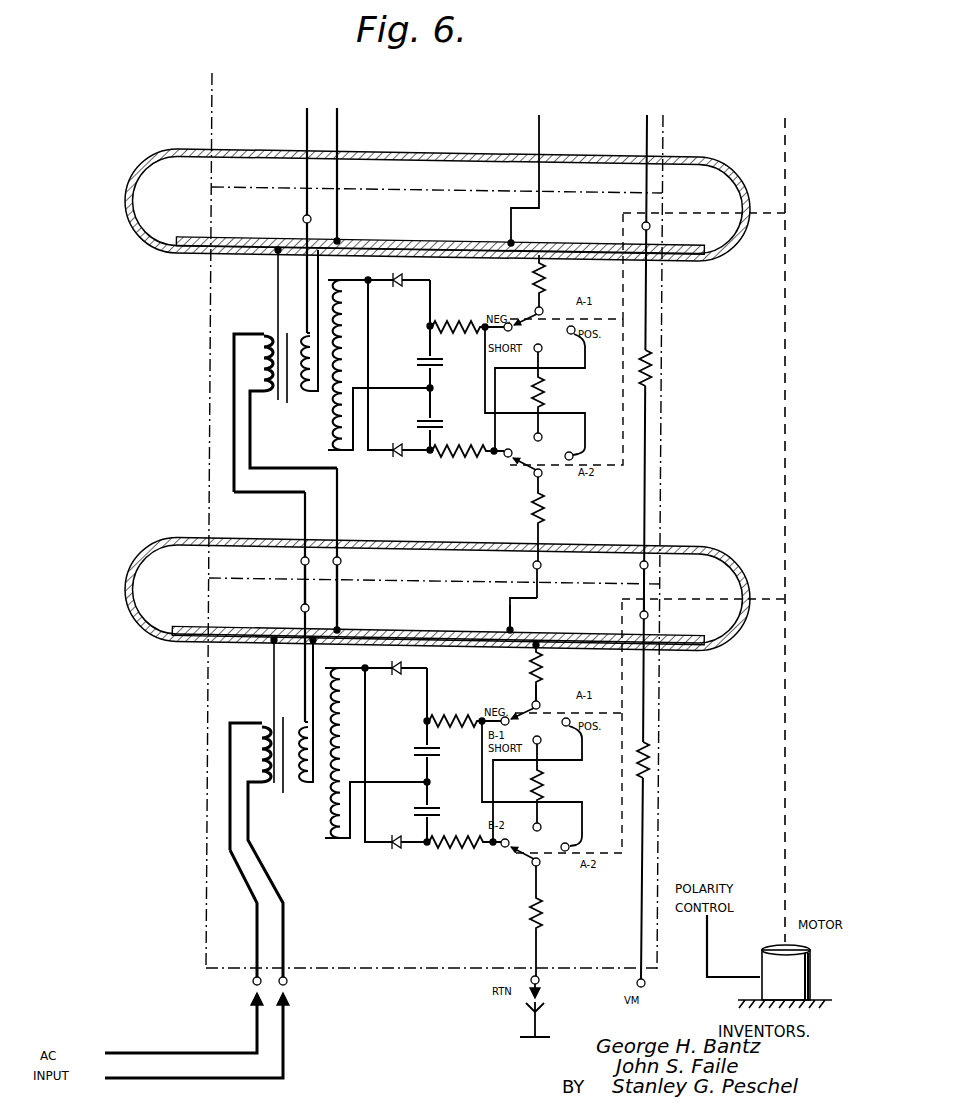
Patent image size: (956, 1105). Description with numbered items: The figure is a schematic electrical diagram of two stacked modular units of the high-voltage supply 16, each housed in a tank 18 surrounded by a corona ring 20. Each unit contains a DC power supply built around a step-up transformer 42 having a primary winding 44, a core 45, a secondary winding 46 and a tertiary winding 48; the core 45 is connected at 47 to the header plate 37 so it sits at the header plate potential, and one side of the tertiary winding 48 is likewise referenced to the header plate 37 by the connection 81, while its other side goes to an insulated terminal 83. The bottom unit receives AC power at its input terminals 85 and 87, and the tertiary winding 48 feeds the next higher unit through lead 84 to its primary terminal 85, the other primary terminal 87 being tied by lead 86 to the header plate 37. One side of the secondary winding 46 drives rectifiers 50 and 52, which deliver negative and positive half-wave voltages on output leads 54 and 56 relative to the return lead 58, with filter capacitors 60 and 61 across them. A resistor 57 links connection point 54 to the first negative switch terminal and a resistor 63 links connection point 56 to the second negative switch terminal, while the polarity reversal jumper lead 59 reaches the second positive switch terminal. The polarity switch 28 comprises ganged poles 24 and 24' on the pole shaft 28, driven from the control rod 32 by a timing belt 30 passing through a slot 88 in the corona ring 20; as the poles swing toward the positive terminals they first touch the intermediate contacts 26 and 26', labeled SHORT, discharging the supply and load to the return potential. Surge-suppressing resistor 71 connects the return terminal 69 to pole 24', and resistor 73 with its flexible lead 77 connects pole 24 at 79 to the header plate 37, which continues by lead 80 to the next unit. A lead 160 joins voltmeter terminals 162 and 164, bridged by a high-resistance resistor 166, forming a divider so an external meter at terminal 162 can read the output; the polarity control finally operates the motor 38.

The polarity control system 16 is at (806, 443).
The tank 18 is at (212, 88).
The corona ring 20 is at (127, 186).
The switch pole 24 is at (539, 574).
The switch pole 24' is at (516, 688).
The intermediate switch contact 26 is at (551, 583).
The intermediate switch contact 26' is at (552, 632).
The pole shaft 28 is at (625, 441).
The timing belt 30 is at (768, 212).
The control rod 32 is at (787, 500).
The header plate 37 is at (421, 240).
The motor 38 is at (790, 989).
The step-up transformer 42 is at (244, 612).
The primary winding 44 is at (254, 372).
The core 45 is at (291, 330).
The secondary winding 46 is at (328, 441).
The core connection 47 is at (278, 253).
The tertiary winding 48 is at (304, 398).
The rectifier 50 is at (403, 279).
The rectifier 52 is at (397, 459).
The output lead 54 is at (428, 327).
The output lead 56 is at (438, 455).
The resistor 57 is at (452, 325).
The return lead 58 is at (416, 389).
The polarity reversal jumper lead 59 is at (480, 748).
The filter capacitor 60 is at (417, 362).
The filter capacitor 61 is at (443, 424).
The resistor 63 is at (494, 458).
The return connection terminal 69 is at (546, 565).
The resistor 71 is at (544, 512).
The resistor 73 is at (545, 690).
The insulated lead 77 is at (545, 662).
The connection 79 is at (546, 628).
The lead 80 is at (508, 612).
The connection 81 is at (341, 241).
The terminal 83 is at (303, 219).
The lead 84 is at (301, 586).
The input terminal 85 is at (301, 562).
The lead 86 is at (339, 600).
The input terminal 87 is at (341, 562).
The slot 88 is at (751, 224).
The lead 160 is at (647, 587).
The voltmeter terminal 162 is at (640, 565).
The voltmeter terminal 164 is at (650, 226).
The high-resistance resistor 166 is at (652, 361).